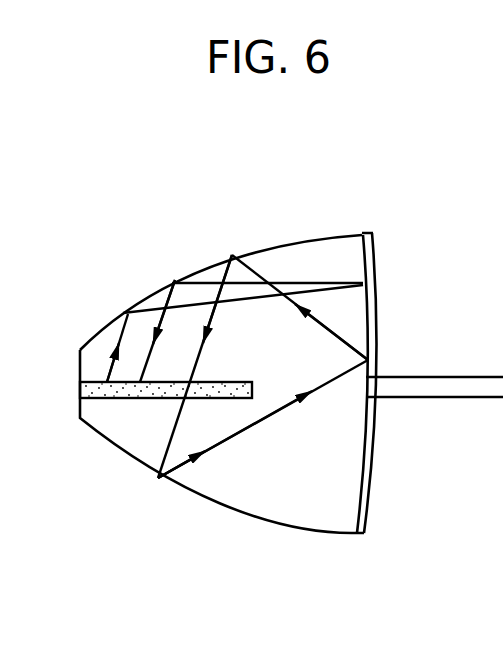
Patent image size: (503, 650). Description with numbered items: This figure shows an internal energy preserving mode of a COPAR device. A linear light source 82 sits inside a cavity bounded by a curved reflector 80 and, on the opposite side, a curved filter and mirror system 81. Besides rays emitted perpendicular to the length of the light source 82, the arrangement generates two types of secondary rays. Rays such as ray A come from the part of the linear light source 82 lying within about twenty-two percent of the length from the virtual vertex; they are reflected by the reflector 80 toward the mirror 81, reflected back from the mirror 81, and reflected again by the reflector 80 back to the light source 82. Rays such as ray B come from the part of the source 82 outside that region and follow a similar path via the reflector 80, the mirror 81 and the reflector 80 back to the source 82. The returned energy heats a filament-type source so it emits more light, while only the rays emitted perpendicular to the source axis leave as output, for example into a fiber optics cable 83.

The reflector 80 is at (232, 256).
The curved filter and mirror system 81 is at (380, 293).
The linear light source 82 is at (105, 399).
The fiber optics cable 83 is at (442, 398).
The ray A is at (197, 276).
The ray B is at (223, 443).